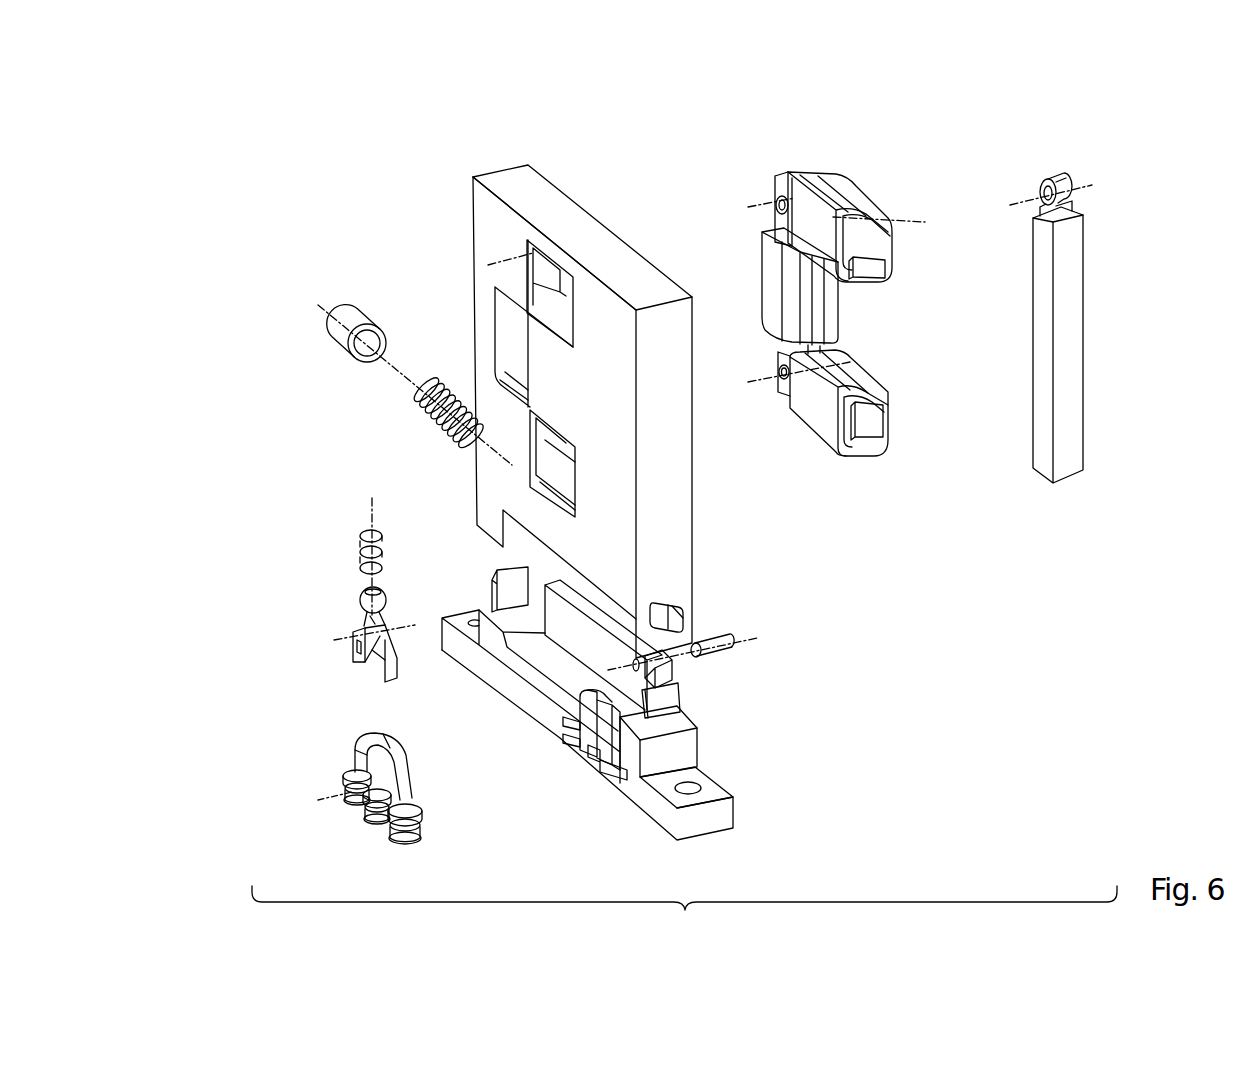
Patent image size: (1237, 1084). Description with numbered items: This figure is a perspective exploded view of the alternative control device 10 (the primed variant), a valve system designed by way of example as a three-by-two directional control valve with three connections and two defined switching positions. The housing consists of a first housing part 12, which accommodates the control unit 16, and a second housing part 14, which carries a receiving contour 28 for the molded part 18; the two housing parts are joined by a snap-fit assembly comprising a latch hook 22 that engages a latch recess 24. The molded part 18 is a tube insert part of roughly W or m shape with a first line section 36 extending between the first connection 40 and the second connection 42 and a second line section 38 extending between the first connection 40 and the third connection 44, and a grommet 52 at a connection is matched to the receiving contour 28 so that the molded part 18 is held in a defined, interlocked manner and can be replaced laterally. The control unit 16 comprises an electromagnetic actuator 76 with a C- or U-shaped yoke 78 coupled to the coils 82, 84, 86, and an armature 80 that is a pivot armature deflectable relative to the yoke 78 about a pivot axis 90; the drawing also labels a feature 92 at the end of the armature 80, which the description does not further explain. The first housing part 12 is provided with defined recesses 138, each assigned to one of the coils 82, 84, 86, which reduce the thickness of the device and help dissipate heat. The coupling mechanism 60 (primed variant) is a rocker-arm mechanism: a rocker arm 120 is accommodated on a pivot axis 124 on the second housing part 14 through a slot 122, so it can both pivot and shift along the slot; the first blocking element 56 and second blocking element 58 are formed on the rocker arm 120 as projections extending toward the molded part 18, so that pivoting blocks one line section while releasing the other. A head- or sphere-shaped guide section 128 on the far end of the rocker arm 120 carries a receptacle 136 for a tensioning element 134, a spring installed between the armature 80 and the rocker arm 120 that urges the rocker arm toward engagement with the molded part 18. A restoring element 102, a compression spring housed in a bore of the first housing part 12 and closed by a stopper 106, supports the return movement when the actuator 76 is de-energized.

The device for controlling fluid media 10 is at (338, 187).
The first housing part 12 is at (625, 210).
The second housing part 14 is at (502, 707).
The control unit 16 is at (1008, 163).
The molded part 18 is at (345, 748).
The latch hook 22 is at (712, 722).
The latch recess 24 is at (681, 611).
The receiving contour 28 is at (592, 782).
The first line section 36 is at (424, 800).
The second line section 38 is at (360, 732).
The first connection 40 is at (360, 826).
The second connection 42 is at (390, 843).
The third connection 44 is at (345, 805).
The grommet 52 is at (413, 845).
The first blocking element 56 is at (396, 688).
The second blocking element 58 is at (353, 660).
The coupling mechanism 60 is at (240, 500).
The electromagnetic actuator 76 is at (806, 165).
The yoke 78 is at (777, 232).
The armature 80 is at (1092, 335).
The coil 82 is at (814, 408).
The coil 84 is at (781, 283).
The coil 86 is at (846, 197).
The pivot axis 90 is at (882, 238).
The mounting tab 92 is at (1058, 185).
The restoring element 102 is at (433, 370).
The stopper 106 is at (333, 333).
The rocker arm 120 is at (395, 640).
The slot 122 is at (353, 641).
The pivot axis 124 is at (724, 653).
The guide section 128 is at (361, 598).
The tensioning element 134 is at (360, 533).
The receptacle 136 is at (378, 588).
The recesses 138 is at (562, 287).